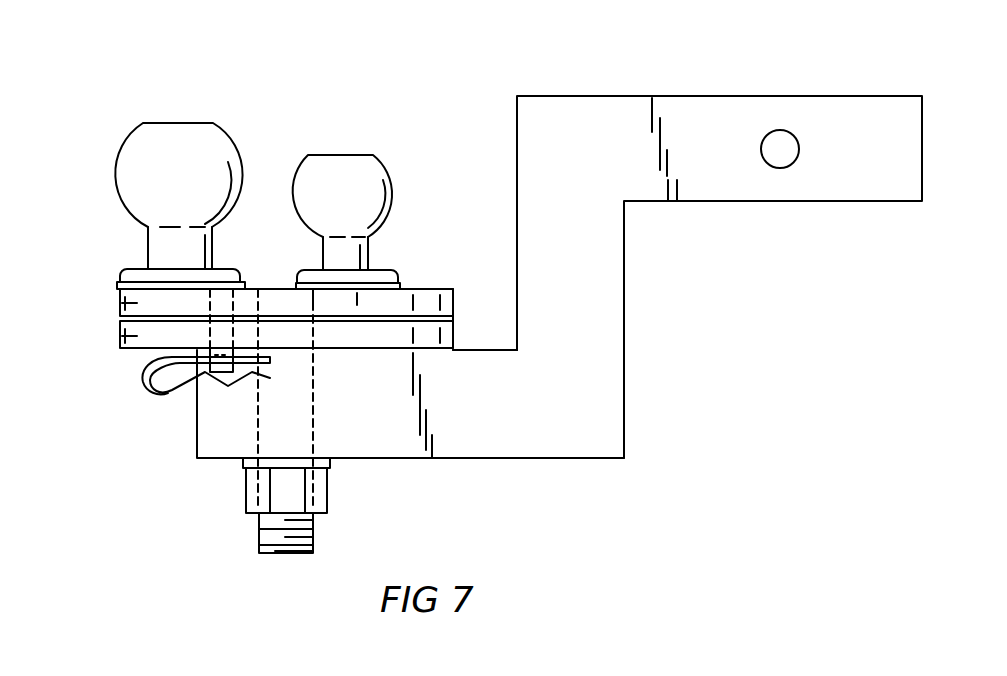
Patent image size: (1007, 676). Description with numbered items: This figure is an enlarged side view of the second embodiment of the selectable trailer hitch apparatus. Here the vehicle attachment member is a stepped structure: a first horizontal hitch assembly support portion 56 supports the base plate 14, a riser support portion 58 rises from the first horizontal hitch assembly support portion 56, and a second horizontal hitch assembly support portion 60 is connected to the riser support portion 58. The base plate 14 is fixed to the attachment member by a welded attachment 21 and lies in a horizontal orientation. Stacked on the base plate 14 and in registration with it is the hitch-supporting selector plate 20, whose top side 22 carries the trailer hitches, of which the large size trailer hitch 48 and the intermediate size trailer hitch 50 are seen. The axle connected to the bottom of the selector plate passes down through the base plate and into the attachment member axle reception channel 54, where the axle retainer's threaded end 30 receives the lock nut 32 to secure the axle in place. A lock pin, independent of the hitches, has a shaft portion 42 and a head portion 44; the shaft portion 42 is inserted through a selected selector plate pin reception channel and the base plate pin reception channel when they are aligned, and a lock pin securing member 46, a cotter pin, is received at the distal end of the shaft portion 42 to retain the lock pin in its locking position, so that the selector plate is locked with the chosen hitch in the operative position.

The base plate 14 is at (120, 328).
The hitch-supporting selector plate 20 is at (120, 294).
The welded attachment 21 is at (455, 350).
The top side 22 is at (420, 288).
The threaded end 30 is at (262, 550).
The lock nut 32 is at (246, 493).
The shaft portion 42 is at (232, 303).
The head portion 44 is at (252, 288).
The lock pin securing member 46 is at (145, 375).
The large size trailer hitch 48 is at (202, 142).
The intermediate size trailer hitch 50 is at (365, 170).
The attachment member axle reception channel 54 is at (316, 430).
The first horizontal hitch assembly support portion 56 is at (478, 418).
The riser support portion 58 is at (600, 265).
The second horizontal hitch assembly support portion 60 is at (743, 175).